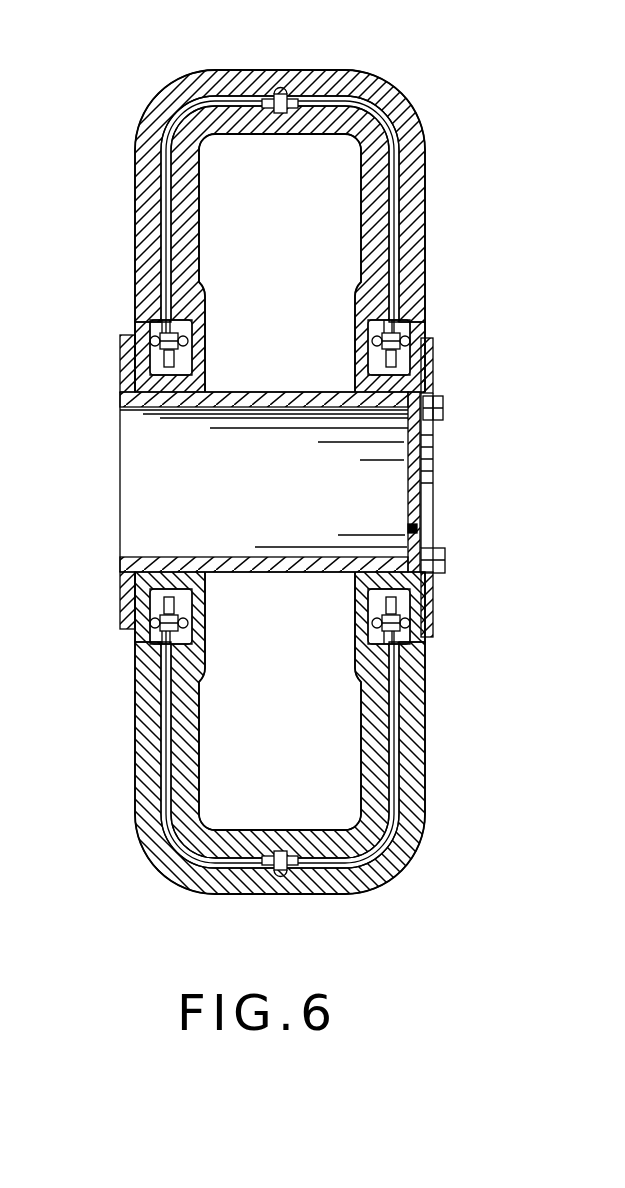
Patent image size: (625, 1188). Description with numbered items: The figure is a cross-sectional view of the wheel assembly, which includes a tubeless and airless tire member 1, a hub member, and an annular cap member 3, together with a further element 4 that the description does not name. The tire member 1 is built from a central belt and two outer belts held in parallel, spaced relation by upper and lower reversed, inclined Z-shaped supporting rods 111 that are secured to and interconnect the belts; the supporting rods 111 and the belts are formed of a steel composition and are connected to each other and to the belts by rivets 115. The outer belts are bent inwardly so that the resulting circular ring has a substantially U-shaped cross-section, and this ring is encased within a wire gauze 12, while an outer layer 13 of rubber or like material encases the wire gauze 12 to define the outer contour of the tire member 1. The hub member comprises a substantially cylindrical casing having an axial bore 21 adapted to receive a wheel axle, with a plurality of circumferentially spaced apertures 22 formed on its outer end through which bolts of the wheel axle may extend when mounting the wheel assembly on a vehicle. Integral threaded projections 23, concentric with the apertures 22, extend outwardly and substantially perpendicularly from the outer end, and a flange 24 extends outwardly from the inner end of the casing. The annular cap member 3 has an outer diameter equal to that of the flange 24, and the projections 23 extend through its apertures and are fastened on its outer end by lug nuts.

The tire member 1 is at (308, 471).
The upper reversed inclined Z-shaped supporting rod 111 is at (377, 123).
The rivet 115 is at (156, 627).
The wire gauze 12 is at (398, 742).
The outer layer 13 is at (415, 687).
The axial bore 21 is at (143, 547).
The aperture 22 is at (414, 524).
The threaded projection 23 is at (442, 405).
The flange 24 is at (128, 353).
The annular cap member 3 is at (430, 350).
The nut 4 is at (437, 575).